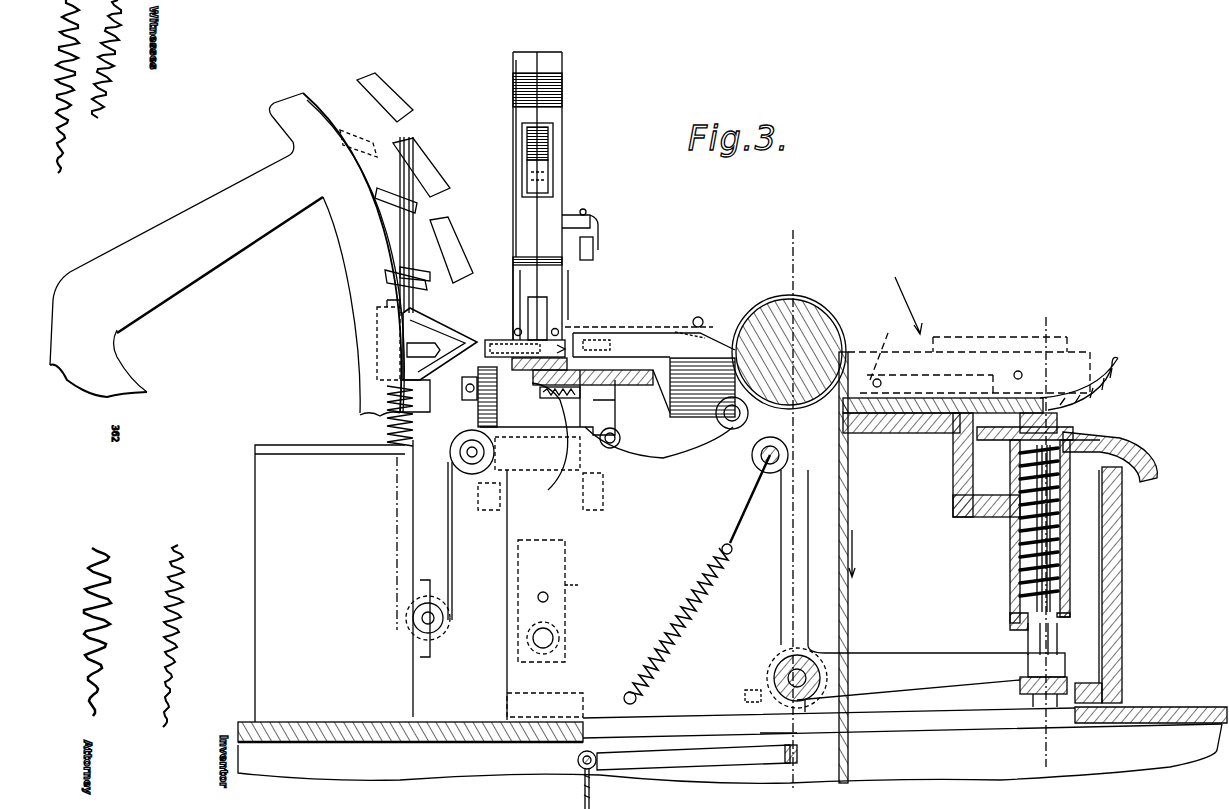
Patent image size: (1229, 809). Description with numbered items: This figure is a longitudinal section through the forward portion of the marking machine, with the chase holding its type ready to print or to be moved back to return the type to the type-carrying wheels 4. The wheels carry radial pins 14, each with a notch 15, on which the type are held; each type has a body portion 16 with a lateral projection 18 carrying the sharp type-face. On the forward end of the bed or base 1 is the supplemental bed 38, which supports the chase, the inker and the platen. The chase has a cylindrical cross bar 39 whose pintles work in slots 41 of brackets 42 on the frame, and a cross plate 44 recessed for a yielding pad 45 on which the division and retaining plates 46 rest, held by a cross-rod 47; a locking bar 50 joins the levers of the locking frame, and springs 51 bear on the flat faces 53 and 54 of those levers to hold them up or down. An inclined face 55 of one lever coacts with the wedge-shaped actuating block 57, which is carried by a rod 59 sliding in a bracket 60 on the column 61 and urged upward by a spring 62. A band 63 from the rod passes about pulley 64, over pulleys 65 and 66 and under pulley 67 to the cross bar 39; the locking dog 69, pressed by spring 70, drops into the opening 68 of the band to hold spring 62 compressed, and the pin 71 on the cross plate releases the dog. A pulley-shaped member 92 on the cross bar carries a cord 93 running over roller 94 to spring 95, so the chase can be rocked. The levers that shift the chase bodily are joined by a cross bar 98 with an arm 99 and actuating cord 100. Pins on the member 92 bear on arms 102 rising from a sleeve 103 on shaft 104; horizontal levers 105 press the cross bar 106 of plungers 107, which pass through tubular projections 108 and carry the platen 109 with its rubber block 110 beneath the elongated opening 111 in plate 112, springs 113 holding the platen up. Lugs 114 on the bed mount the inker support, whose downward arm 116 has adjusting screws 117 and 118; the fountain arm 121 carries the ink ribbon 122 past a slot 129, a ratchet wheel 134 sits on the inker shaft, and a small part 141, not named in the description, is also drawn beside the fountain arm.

The bed or base 1 is at (1148, 705).
The type-carrying wheel 4 is at (213, 262).
The pin or stud 14 is at (412, 338).
The notch or recess 15 is at (402, 357).
The body portion of the type 16 is at (452, 268).
The lateral projection of the type-body 18 is at (440, 232).
The frame or supplemental bed 38 is at (1122, 625).
The cross member or bar of the chase 39 is at (842, 330).
The slot 41 is at (722, 365).
The bracket or plate 42 is at (697, 390).
The cross-bar or plate 44 is at (593, 386).
The cushion or yielding pad 45 is at (526, 355).
The division and retaining plates 46 is at (560, 302).
The cross-rod 47 is at (585, 330).
The cross or locking bar 50 is at (518, 328).
The spring 51 is at (660, 335).
The flat face 53 is at (880, 352).
The flat face 54 is at (703, 316).
The inclined face 55 is at (508, 308).
The wedge-shaped abutment or actuating-block 57 is at (438, 365).
The rod 59 is at (380, 170).
The bracket 60 is at (422, 300).
The pillar or column 61 is at (330, 583).
The spring 62 is at (385, 436).
The band or strap 63 is at (455, 545).
The pulley 64 is at (440, 632).
The pulley 65 is at (495, 452).
The pulley 66 is at (611, 448).
The pulley 67 is at (735, 430).
The opening 68 is at (550, 444).
The locking dog or lever 69 is at (602, 405).
The spring 70 is at (560, 402).
The pin 71 is at (629, 347).
The pulley or pulley-shaped member 92 is at (822, 320).
The cord or band 93 is at (850, 470).
The roller or wheel 94 is at (765, 462).
The spring 95 is at (723, 550).
The cross-bar 98 is at (800, 760).
The laterally-projecting arm 99 is at (708, 757).
The actuating-cord 100 is at (580, 793).
The arm or lever 102 is at (783, 566).
The sleeve or collar 103 is at (780, 662).
The shaft 104 is at (786, 678).
The horizontally-disposed arm or lever 105 is at (857, 670).
The cross-bar 106 is at (1025, 697).
The plunger 107 is at (1060, 640).
The tubular projection 108 is at (1012, 560).
The platen 109 is at (1125, 449).
The yielding block 110 is at (1060, 423).
The elongated opening 111 is at (1050, 405).
The plate 112 is at (1123, 366).
The spring 113 is at (1005, 512).
The ears or lugs 114 is at (494, 512).
The downwardly-projecting arm 116 is at (566, 601).
The adjusting screw 117 is at (550, 600).
The adjusting screw 118 is at (553, 638).
The projecting arm of the ink fountain 121 is at (552, 113).
The ink ribbon or carrier 122 is at (538, 173).
The slot or opening 129 is at (549, 148).
The ratchet-wheel 134 is at (485, 397).
The bracket 141 is at (596, 258).